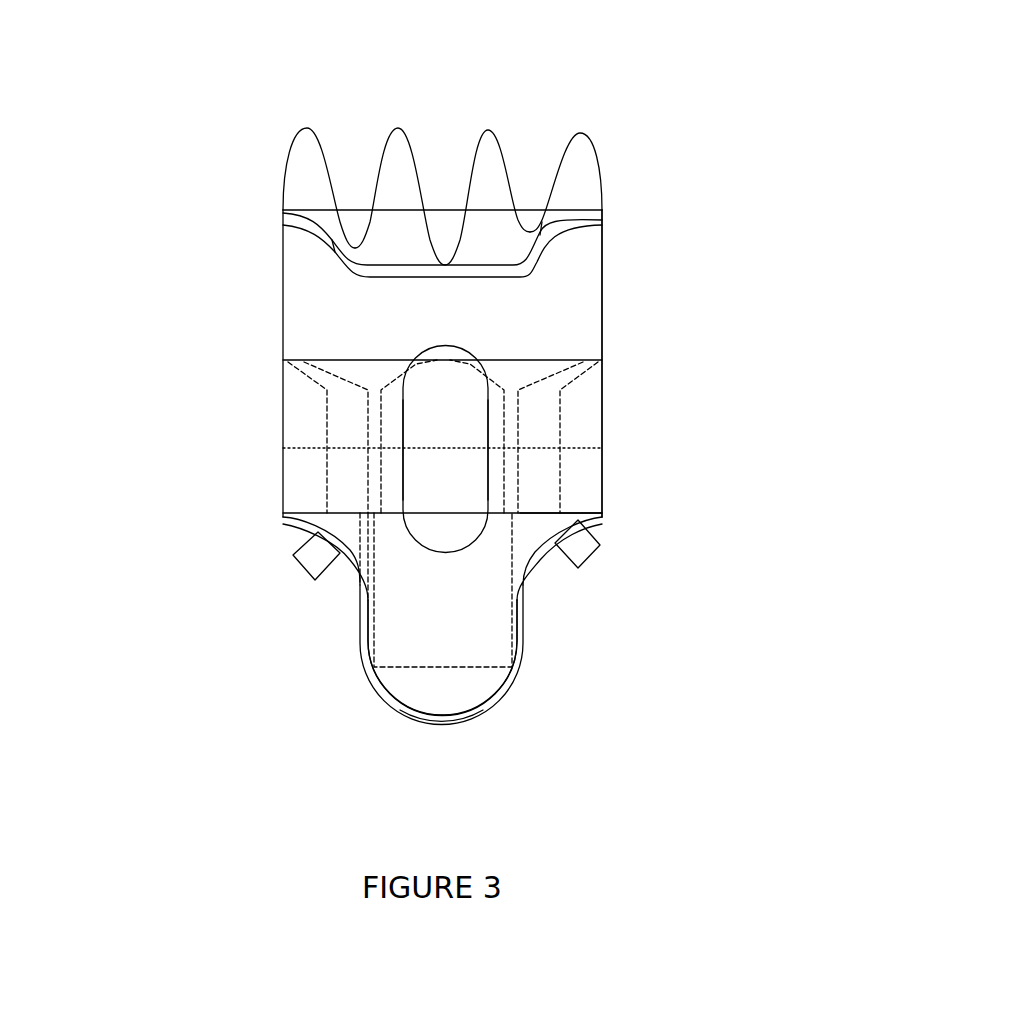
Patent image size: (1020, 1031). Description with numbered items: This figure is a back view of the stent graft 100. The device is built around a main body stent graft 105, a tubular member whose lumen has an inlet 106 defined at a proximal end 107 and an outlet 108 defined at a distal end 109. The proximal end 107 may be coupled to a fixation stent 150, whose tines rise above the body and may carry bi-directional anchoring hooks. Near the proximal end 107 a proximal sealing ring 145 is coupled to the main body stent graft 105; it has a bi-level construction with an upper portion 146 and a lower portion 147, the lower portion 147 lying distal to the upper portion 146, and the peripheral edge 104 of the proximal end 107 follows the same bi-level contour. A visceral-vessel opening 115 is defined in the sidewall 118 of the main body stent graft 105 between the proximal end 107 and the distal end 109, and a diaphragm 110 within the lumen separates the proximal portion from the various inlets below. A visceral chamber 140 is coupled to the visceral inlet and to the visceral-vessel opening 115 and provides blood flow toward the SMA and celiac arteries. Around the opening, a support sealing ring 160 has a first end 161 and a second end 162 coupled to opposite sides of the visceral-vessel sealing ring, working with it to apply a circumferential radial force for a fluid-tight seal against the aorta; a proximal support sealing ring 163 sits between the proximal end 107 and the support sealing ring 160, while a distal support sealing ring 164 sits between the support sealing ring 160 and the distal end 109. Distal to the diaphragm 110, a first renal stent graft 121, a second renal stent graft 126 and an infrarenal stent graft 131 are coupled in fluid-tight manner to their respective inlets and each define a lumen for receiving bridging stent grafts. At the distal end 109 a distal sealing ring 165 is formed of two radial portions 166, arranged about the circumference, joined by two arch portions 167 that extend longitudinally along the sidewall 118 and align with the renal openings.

The stent graft 100 is at (705, 110).
The fixation stent 150 is at (287, 170).
The peripheral edge 104 is at (605, 212).
The inlet 106 is at (605, 212).
The main body stent graft 105 is at (603, 247).
The proximal end 107 is at (270, 202).
The upper portion 146 is at (315, 229).
The lower portion 147 is at (383, 278).
The proximal sealing ring 145 is at (322, 243).
The sidewall 118 is at (603, 290).
The proximal support sealing ring 163 is at (550, 357).
The diaphragm 110 is at (455, 358).
The visceral chamber 140 is at (437, 492).
The visceral-vessel opening 115 is at (403, 415).
The second renal stent graft 126 is at (327, 467).
The support sealing ring 160 is at (582, 447).
The first end 161 is at (403, 450).
The second end 162 is at (488, 447).
The distal support sealing ring 164 is at (568, 512).
The radial portions 166 is at (278, 522).
The first renal stent graft 121 is at (590, 533).
The infrarenal stent graft 131 is at (510, 548).
The distal end 109 is at (330, 693).
The distal sealing ring 165 is at (388, 697).
The outlet 108 is at (502, 700).
The arch portions 167 is at (437, 730).